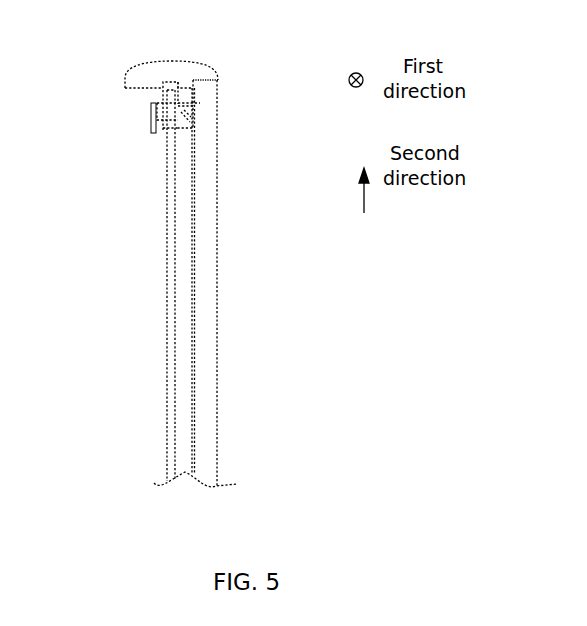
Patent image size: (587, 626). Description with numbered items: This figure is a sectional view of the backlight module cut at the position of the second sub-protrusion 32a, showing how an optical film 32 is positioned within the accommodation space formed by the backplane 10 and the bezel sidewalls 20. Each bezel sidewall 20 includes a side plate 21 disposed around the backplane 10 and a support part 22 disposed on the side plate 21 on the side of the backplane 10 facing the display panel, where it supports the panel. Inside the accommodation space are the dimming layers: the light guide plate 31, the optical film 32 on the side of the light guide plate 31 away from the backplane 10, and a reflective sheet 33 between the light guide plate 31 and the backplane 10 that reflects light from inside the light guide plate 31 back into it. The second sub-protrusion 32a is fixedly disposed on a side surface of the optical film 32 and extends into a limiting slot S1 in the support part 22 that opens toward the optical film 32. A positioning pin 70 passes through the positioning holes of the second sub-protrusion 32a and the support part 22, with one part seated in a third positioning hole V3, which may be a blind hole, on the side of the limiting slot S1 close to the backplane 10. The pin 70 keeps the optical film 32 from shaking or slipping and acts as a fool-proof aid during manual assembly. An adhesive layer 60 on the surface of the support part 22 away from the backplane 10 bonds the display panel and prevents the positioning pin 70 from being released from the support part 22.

The backplane 10 is at (205, 378).
The bezel sidewall 20 is at (220, 264).
The side plate 21 is at (205, 67).
The support part 22 is at (187, 92).
The light guide plate 31 is at (183, 243).
The optical film 32 is at (168, 252).
The second sub-protrusion 32a is at (160, 98).
The reflective sheet 33 is at (192, 313).
The adhesive layer 60 is at (151, 125).
The positioning pin 70 is at (185, 110).
The limiting slot S1 is at (163, 83).
The third positioning hole V3 is at (192, 108).